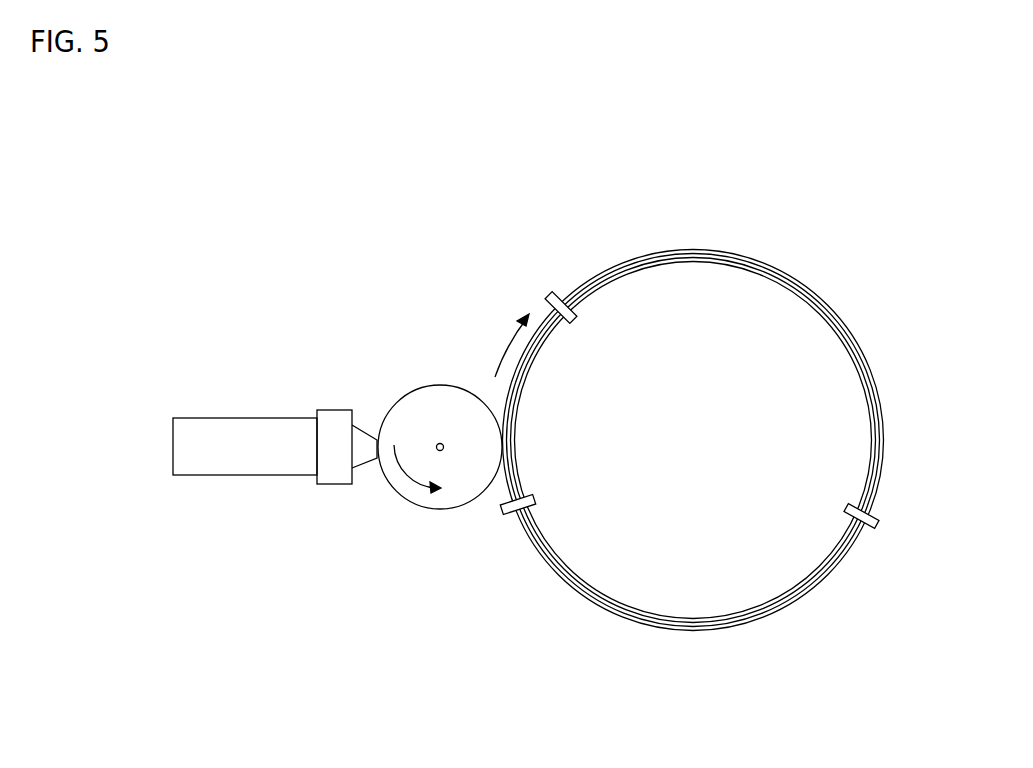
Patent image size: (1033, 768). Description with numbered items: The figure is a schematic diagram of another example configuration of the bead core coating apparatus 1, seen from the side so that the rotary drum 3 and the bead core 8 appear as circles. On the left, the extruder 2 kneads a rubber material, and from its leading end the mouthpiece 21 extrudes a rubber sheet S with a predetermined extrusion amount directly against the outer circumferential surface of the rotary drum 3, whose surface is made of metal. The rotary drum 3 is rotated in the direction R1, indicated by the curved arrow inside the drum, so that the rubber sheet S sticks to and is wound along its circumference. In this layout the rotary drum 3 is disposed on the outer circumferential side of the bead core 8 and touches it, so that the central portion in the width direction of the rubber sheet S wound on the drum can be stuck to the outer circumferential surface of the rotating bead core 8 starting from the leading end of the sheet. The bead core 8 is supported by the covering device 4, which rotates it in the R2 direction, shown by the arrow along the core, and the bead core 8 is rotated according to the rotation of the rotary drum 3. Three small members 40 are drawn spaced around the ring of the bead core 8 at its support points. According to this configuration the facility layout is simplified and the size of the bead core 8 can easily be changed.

The bead core coating apparatus 1 is at (664, 230).
The extruder 2 is at (248, 418).
The mouthpiece 21 is at (375, 438).
The rotary drum 3 is at (433, 384).
The covering device 4 is at (806, 612).
The bead core 8 is at (877, 383).
The holding member 40 is at (550, 298).
The rotation direction of rotary drum R1 is at (414, 456).
The rotation direction of bead core R2 is at (506, 345).
The rubber sheet S is at (393, 486).